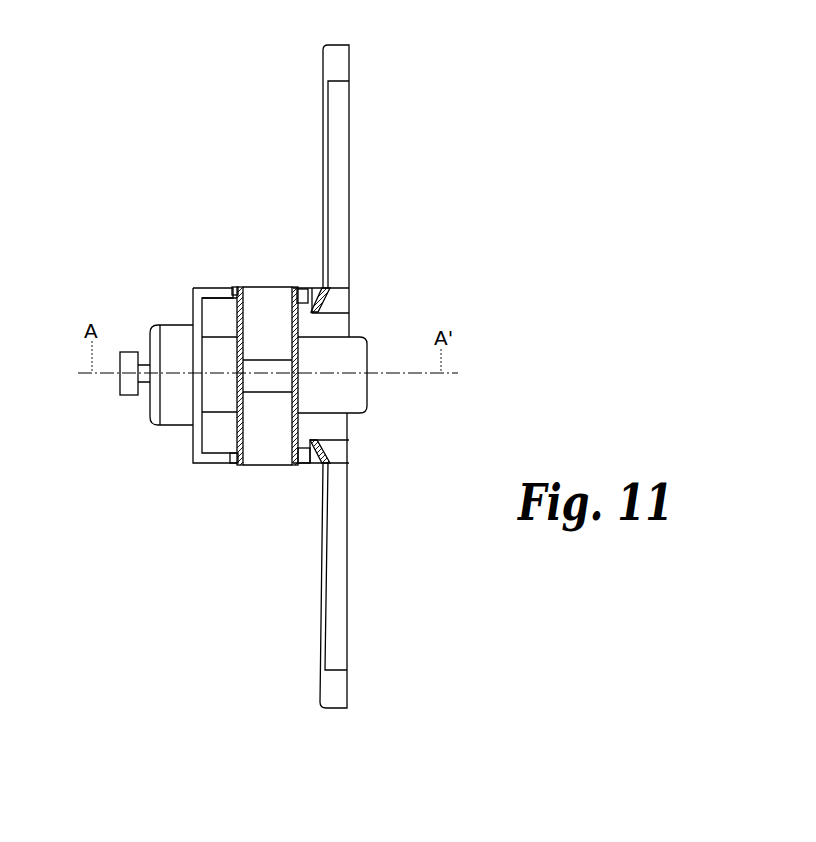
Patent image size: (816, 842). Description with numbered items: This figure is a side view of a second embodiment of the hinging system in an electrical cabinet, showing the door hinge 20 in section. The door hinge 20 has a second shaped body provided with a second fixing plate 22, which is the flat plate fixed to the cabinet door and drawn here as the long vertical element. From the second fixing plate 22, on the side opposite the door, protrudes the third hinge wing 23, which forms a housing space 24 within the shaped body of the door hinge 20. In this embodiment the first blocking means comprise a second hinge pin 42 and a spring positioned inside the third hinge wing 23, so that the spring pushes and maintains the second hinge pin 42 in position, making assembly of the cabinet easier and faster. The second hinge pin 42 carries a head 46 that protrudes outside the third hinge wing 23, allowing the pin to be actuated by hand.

The door hinge 20 is at (397, 374).
The second fixing plate 22 is at (349, 137).
The third hinge wing 23 is at (193, 447).
The housing space 24 is at (265, 307).
The second hinge pin 42 is at (273, 382).
The head 46 is at (125, 396).